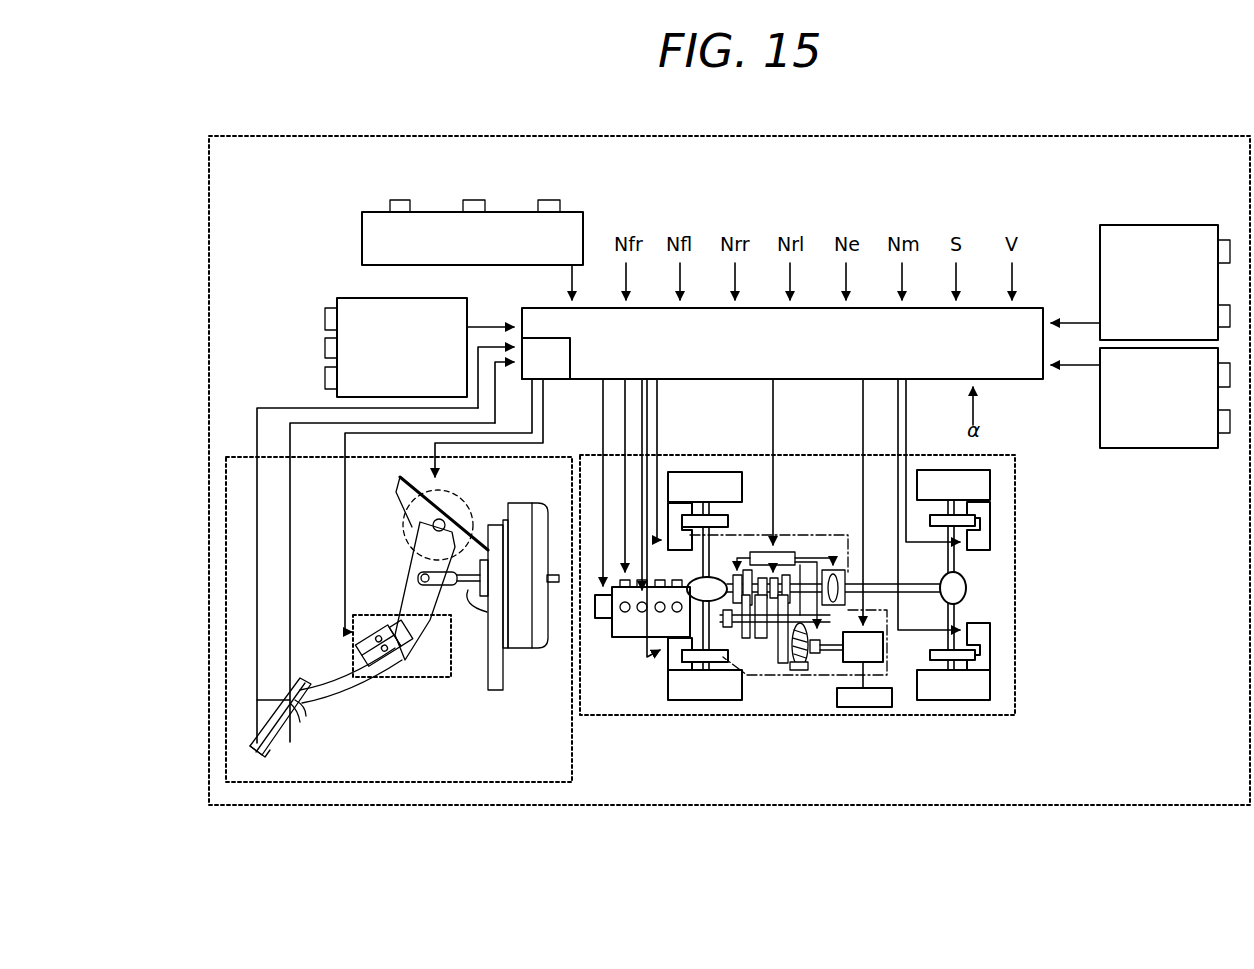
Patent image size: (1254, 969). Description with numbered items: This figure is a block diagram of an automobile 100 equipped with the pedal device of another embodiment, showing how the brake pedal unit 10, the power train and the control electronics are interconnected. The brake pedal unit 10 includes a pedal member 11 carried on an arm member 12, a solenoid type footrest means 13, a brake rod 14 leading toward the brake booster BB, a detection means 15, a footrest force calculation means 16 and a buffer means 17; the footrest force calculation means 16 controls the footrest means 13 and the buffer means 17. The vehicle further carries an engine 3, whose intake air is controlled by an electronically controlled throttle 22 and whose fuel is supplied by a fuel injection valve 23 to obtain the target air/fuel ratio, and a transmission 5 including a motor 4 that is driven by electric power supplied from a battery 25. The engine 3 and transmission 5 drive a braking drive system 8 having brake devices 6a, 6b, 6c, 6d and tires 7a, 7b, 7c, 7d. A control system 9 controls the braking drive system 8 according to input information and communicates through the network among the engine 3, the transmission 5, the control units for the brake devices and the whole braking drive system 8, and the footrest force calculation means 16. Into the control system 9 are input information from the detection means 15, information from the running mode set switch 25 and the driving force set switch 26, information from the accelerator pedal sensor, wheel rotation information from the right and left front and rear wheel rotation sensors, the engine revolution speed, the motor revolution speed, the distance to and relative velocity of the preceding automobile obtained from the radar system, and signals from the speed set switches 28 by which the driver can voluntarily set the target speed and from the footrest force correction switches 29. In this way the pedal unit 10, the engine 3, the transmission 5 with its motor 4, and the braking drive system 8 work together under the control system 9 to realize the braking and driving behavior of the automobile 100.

The automobile 100 is at (888, 134).
The driving force (acceleration) set switch 26 is at (400, 200).
The running mode set switch 25 is at (337, 302).
The footrest force calculation means 16 is at (570, 357).
The speed set switch 28 is at (1160, 225).
The footrest force correction switch 29 is at (1158, 448).
The control system 9 is at (815, 380).
The fuel injection valve 23 is at (622, 570).
The brake device 6a is at (663, 535).
The brake device 6b is at (666, 665).
The brake device 6c is at (990, 516).
The brake device 6d is at (990, 653).
The tire 7a is at (720, 472).
The tire 7b is at (712, 700).
The tire 7c is at (938, 470).
The tire 7d is at (960, 700).
The engine 3 is at (632, 637).
The electronically controlled throttle 22 is at (603, 618).
The transmission 5 is at (770, 670).
The motor 4 is at (883, 648).
The braking drive system 8 is at (913, 718).
The brake pedal unit 10 is at (572, 758).
The pedal member 11 is at (290, 735).
The arm member 12 is at (348, 694).
The footrest means 13 is at (428, 680).
The brake rod 14 is at (480, 545).
The detection means 15 is at (268, 703).
The buffer means 17 is at (420, 537).
The brake booster BB is at (548, 620).